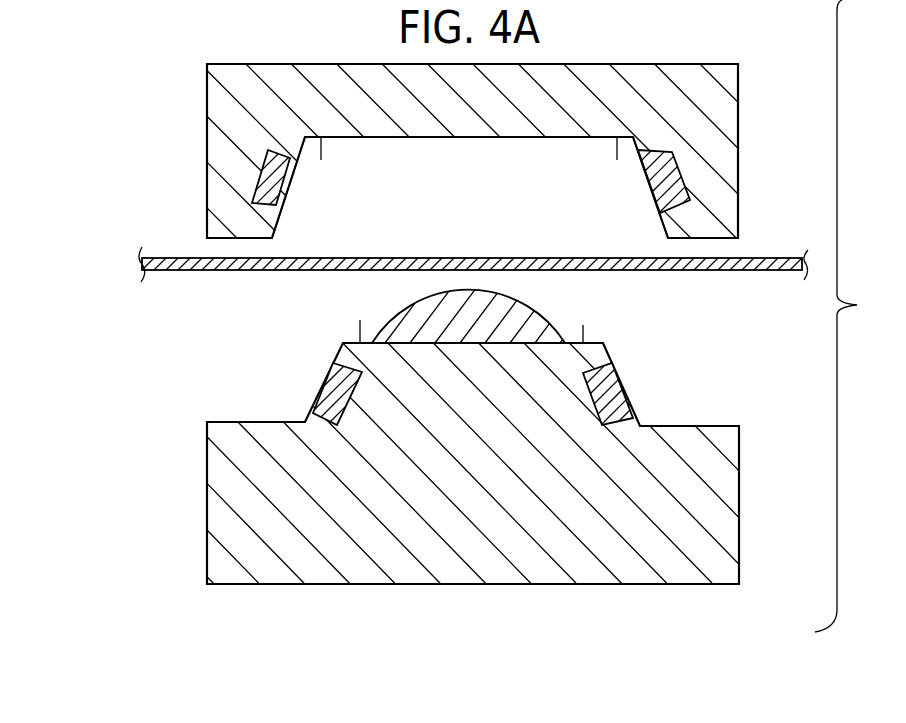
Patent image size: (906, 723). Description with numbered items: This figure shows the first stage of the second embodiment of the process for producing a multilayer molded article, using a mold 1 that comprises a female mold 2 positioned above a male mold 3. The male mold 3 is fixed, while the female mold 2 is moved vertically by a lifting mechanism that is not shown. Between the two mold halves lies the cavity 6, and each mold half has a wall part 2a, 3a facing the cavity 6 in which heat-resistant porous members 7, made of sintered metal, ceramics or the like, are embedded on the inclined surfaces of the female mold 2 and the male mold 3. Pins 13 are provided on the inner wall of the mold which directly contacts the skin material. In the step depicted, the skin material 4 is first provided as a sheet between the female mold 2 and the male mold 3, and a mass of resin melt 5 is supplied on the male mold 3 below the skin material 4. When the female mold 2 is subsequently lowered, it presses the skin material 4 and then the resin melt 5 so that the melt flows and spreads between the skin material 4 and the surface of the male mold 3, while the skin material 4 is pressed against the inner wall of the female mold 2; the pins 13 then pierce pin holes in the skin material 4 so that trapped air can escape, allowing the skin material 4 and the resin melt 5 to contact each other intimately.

The mold 1 is at (145, 209).
The female mold 2 is at (712, 107).
The wall part 2a is at (610, 352).
The male mold 3 is at (728, 537).
The wall part 3a is at (273, 223).
The skin material 4 is at (771, 272).
The resin melt 5 is at (407, 322).
The cavity 6 is at (482, 229).
The heat-resistant porous member 7 is at (263, 186).
The pins 13 is at (324, 147).